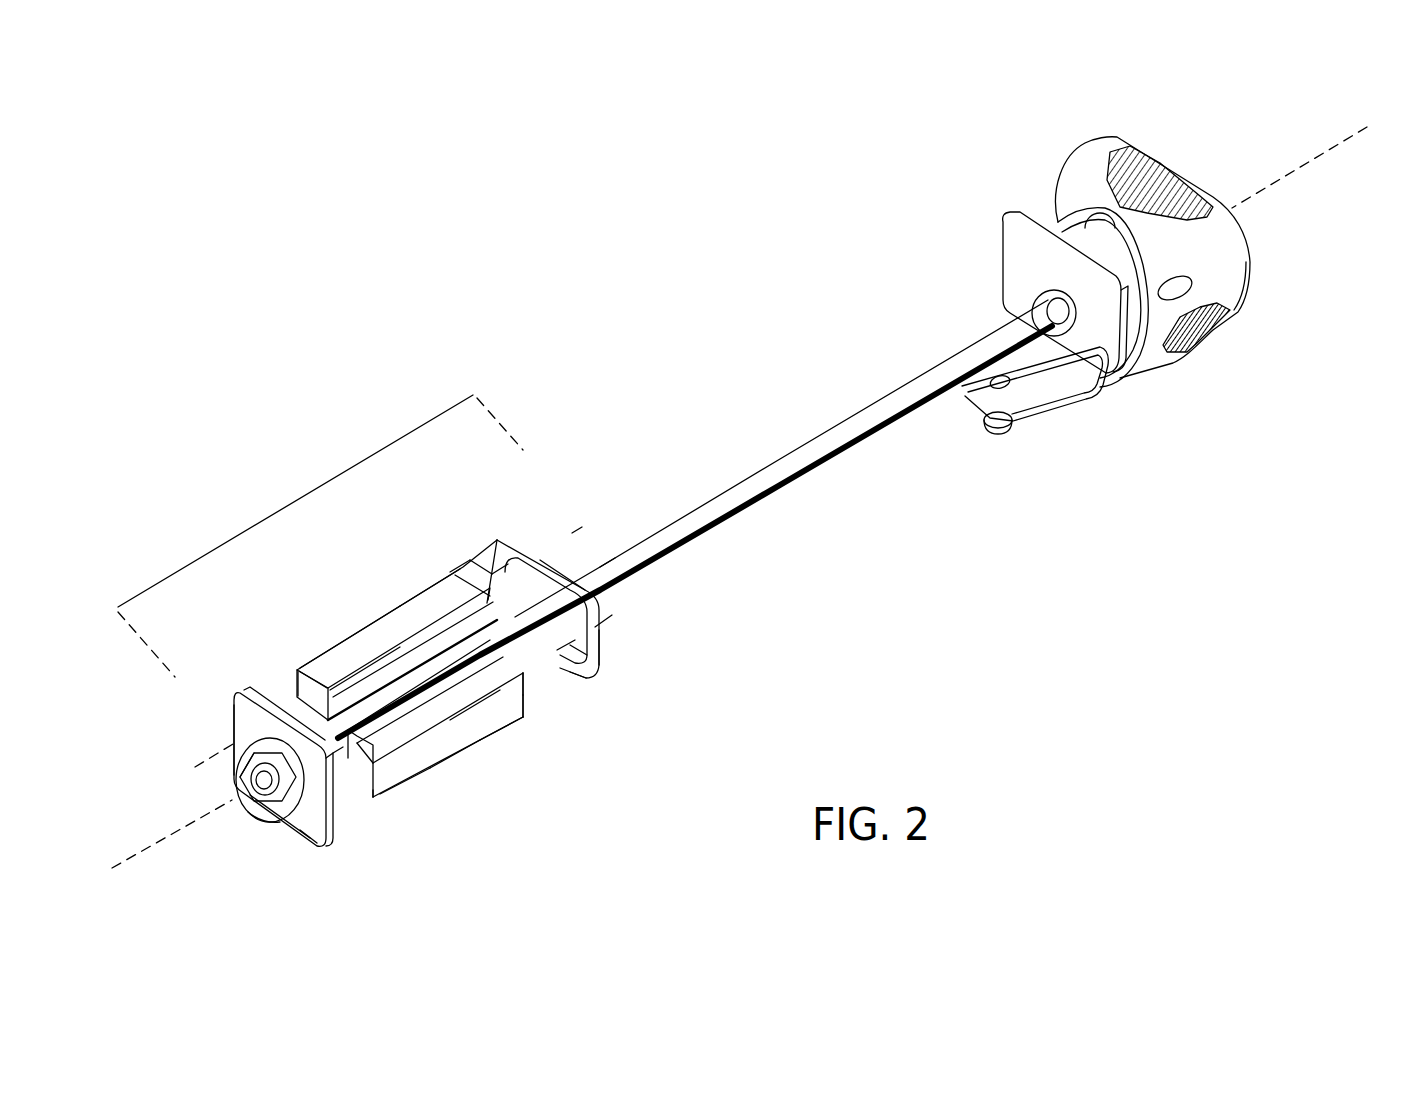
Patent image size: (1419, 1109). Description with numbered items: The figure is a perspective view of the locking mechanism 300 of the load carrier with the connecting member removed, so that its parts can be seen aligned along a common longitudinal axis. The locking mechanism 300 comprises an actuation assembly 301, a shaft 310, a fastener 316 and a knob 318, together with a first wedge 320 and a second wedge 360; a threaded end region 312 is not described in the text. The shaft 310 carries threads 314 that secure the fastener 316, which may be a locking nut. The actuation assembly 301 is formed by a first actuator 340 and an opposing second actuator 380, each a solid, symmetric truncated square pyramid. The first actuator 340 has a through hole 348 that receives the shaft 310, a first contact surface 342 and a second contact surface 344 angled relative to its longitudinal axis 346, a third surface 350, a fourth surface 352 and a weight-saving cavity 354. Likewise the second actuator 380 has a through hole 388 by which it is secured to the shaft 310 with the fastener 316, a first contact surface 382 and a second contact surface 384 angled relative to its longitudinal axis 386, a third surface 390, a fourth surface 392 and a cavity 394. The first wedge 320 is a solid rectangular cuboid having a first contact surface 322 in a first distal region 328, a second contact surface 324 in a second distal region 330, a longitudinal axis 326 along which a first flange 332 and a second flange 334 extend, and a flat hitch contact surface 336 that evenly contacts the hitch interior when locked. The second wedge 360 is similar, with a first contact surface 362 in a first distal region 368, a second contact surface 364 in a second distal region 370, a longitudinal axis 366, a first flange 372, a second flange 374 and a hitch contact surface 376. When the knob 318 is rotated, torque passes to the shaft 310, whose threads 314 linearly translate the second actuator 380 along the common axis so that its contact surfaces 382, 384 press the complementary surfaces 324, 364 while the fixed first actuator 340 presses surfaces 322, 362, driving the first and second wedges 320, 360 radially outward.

The locking mechanism 300 is at (853, 205).
The actuation assembly 301 is at (297, 497).
The shaft 310 is at (856, 414).
The first end of rod 312 is at (208, 815).
The threads 314 is at (848, 449).
The fastener 316 is at (240, 777).
The knob 318 is at (1093, 158).
The first wedge 320 is at (407, 594).
The first contact surface 322 is at (613, 597).
The second contact surface 324 is at (352, 672).
The longitudinal axis 326 is at (558, 542).
The first distal region 328 is at (488, 578).
The second distal region 330 is at (314, 676).
The first flange 332 is at (405, 617).
The second flange 334 is at (292, 697).
The hitch contact surface 336 is at (397, 612).
The first actuator 340 is at (549, 536).
The first contact surface 342 is at (481, 585).
The second contact surface 344 is at (543, 687).
The longitudinal axis 346 is at (178, 832).
The through hole 348 is at (588, 568).
The third surface 350 is at (534, 724).
The fourth surface 352 is at (449, 565).
The cavity 354 is at (612, 655).
The second wedge 360 is at (451, 794).
The first contact surface 362 is at (510, 695).
The second contact surface 364 is at (378, 804).
The longitudinal axis 366 is at (612, 655).
The first distal region 368 is at (540, 700).
The second distal region 370 is at (412, 830).
The first flange 372 is at (473, 740).
The second flange 374 is at (373, 812).
The hitch contact surface 376 is at (503, 790).
The second actuator 380 is at (305, 866).
The first contact surface 382 is at (267, 697).
The second contact surface 384 is at (350, 795).
The longitudinal axis 386 is at (140, 863).
The through hole 388 is at (246, 741).
The third surface 390 is at (254, 820).
The fourth surface 392 is at (226, 714).
The cavity 394 is at (291, 832).